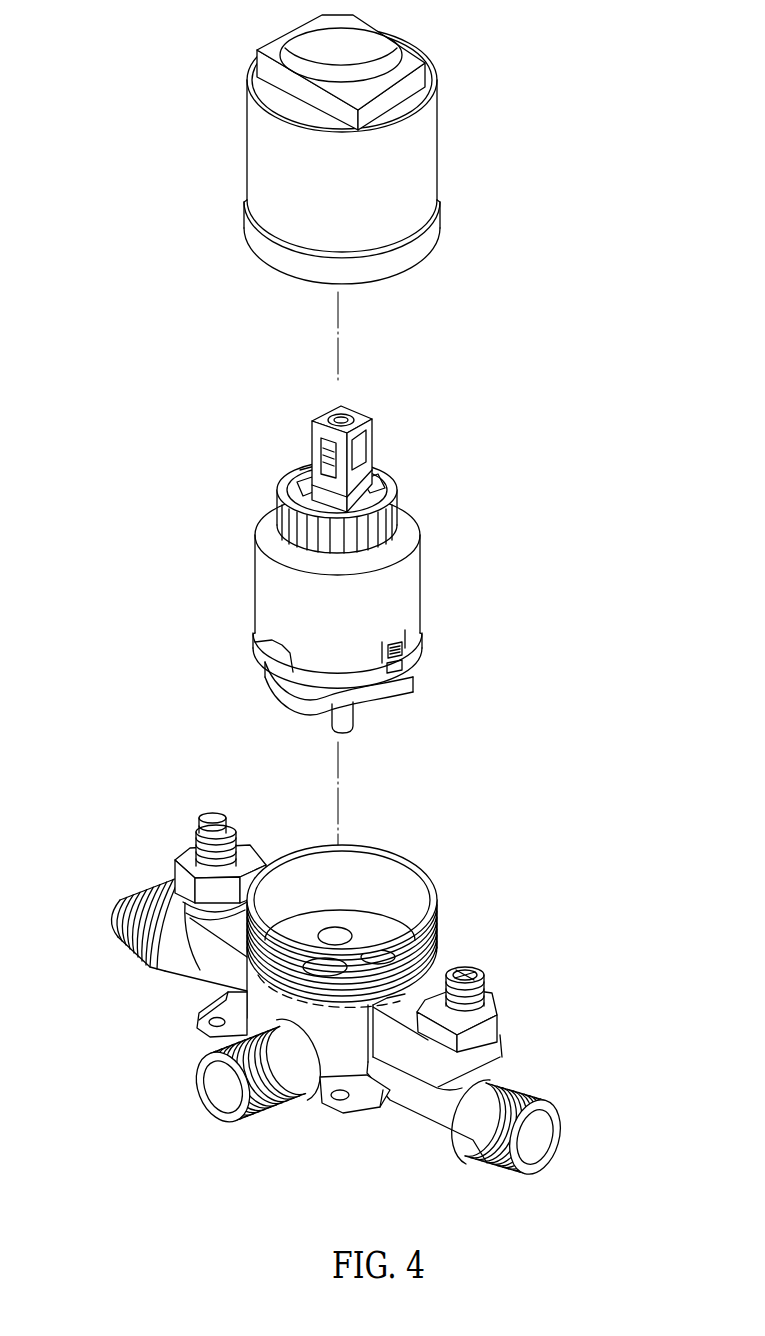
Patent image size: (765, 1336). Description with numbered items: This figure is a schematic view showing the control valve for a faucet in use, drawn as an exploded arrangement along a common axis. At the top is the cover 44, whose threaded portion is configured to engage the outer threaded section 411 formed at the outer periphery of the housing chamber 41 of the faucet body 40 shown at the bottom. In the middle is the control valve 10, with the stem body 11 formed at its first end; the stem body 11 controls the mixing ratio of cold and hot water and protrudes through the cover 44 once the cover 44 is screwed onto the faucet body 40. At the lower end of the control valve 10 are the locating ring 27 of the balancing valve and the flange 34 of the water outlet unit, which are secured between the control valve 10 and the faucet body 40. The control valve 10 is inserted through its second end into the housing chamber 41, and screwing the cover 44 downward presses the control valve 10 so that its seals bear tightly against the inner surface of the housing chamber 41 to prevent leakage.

The cover 44 is at (430, 160).
The stem body 11 is at (315, 420).
The control valve 10 is at (365, 581).
The locating ring 27 is at (412, 695).
The flange 34 is at (285, 710).
The housing chamber 41 is at (430, 913).
The outer threaded section 411 is at (435, 910).
The faucet body 40 is at (315, 972).